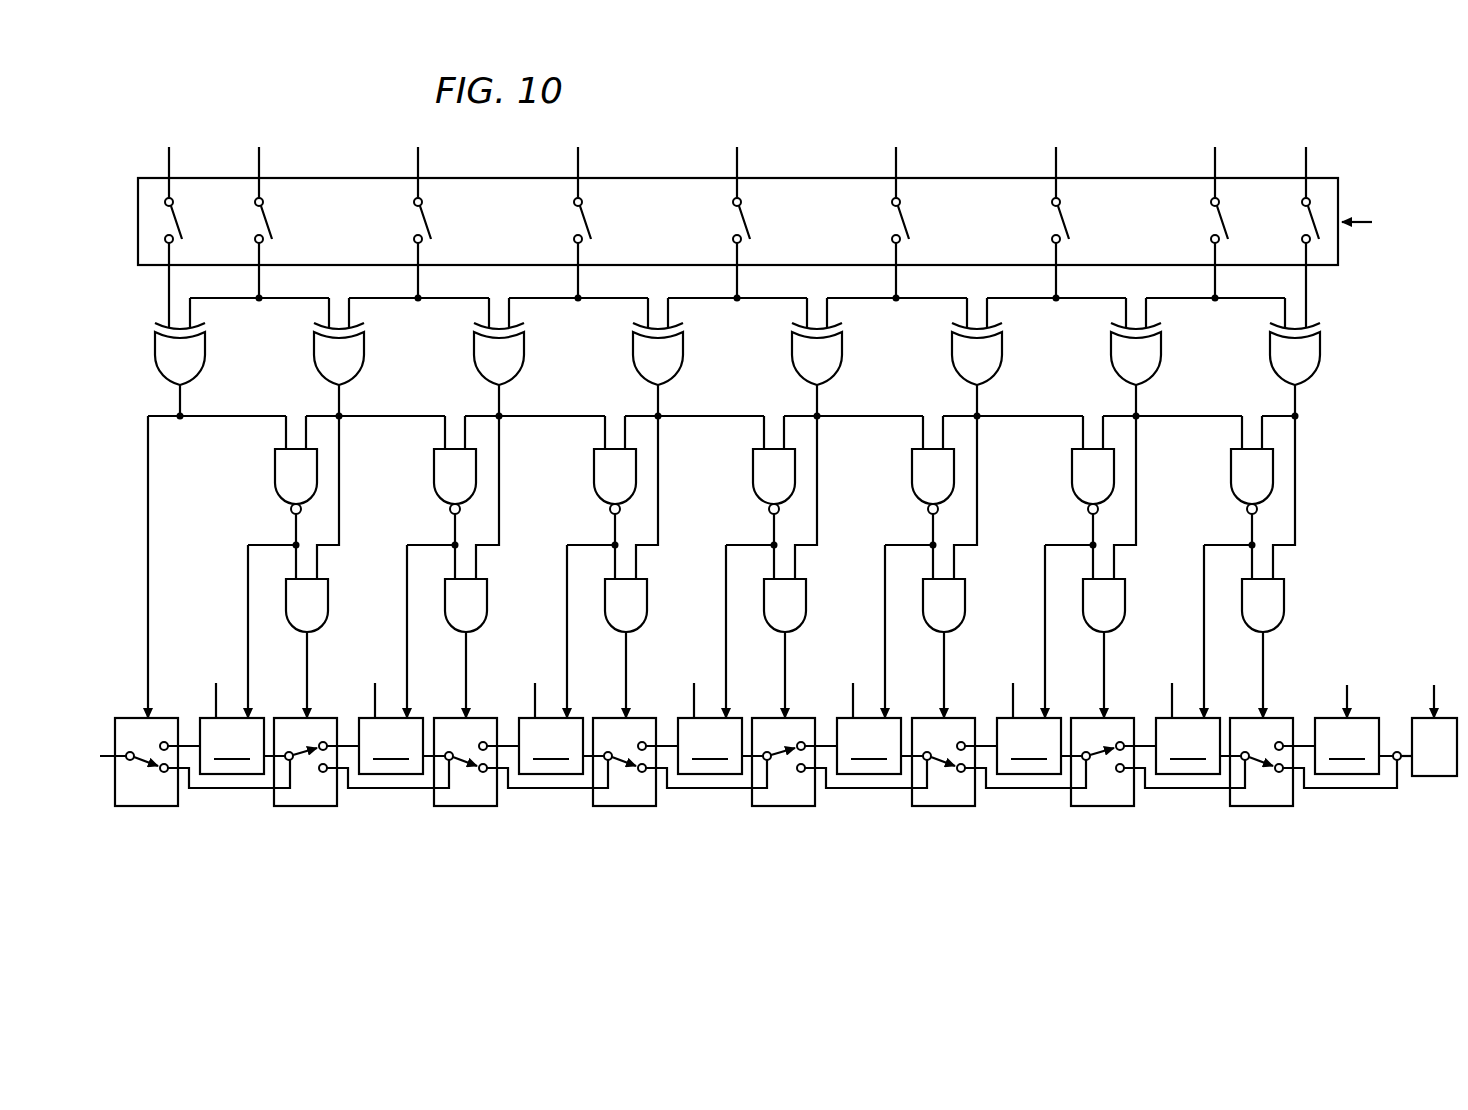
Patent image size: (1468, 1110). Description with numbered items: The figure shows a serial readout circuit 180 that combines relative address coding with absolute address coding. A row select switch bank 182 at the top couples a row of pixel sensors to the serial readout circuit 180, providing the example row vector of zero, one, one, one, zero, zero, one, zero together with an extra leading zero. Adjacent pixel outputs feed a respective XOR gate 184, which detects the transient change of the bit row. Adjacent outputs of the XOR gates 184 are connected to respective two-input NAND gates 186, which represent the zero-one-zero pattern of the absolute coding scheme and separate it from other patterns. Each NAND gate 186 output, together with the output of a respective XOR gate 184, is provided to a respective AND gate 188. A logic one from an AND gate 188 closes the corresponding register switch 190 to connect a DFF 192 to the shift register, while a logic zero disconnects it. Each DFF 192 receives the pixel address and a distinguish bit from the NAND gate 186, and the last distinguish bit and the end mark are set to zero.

The serial readout circuit 180 is at (835, 113).
The row select switch bank 182 is at (972, 176).
The XOR gate 184 is at (205, 355).
The NAND gate 186 is at (275, 470).
The AND gate 188 is at (328, 600).
The register switch 190 is at (142, 806).
The DFF 192 is at (1433, 776).